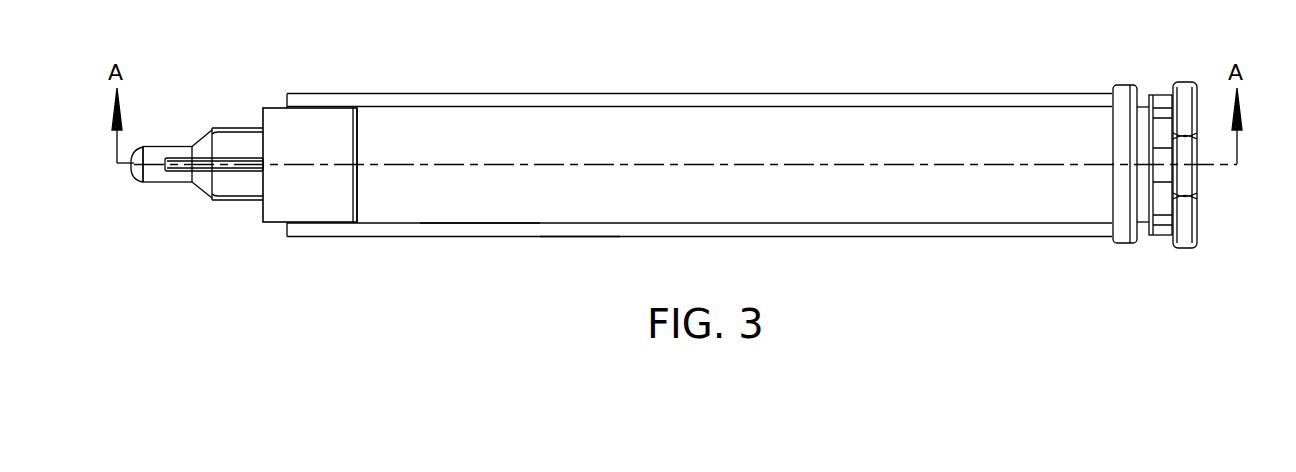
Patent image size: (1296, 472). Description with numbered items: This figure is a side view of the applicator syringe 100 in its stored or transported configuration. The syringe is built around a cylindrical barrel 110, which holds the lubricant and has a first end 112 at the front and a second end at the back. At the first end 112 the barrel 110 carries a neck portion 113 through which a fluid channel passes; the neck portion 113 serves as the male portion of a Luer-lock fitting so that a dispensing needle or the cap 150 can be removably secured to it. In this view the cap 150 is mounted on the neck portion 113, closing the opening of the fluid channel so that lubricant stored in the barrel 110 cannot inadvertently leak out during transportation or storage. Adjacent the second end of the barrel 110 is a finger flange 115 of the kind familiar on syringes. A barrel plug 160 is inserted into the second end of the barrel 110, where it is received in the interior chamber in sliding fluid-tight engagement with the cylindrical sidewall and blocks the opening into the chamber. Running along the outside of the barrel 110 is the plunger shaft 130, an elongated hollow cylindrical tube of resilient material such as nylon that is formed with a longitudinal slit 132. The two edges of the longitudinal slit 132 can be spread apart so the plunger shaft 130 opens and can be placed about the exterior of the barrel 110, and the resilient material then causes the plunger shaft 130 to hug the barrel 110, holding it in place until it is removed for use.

The applicator syringe 100 is at (770, 130).
The barrel 110 is at (653, 127).
The first end 112 is at (368, 125).
The neck portion 113 is at (305, 193).
The finger flange 115 is at (1158, 195).
The plunger shaft 130 is at (478, 230).
The longitudinal slit 132 is at (578, 228).
The cap 150 is at (233, 147).
The barrel plug 160 is at (1185, 115).